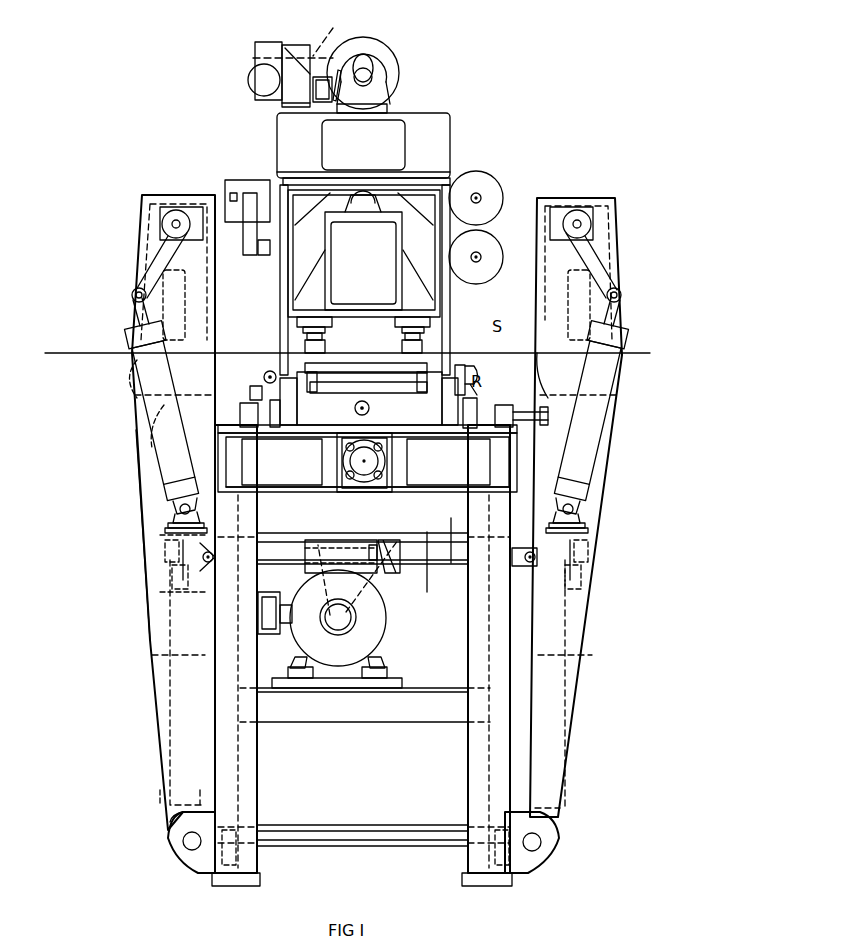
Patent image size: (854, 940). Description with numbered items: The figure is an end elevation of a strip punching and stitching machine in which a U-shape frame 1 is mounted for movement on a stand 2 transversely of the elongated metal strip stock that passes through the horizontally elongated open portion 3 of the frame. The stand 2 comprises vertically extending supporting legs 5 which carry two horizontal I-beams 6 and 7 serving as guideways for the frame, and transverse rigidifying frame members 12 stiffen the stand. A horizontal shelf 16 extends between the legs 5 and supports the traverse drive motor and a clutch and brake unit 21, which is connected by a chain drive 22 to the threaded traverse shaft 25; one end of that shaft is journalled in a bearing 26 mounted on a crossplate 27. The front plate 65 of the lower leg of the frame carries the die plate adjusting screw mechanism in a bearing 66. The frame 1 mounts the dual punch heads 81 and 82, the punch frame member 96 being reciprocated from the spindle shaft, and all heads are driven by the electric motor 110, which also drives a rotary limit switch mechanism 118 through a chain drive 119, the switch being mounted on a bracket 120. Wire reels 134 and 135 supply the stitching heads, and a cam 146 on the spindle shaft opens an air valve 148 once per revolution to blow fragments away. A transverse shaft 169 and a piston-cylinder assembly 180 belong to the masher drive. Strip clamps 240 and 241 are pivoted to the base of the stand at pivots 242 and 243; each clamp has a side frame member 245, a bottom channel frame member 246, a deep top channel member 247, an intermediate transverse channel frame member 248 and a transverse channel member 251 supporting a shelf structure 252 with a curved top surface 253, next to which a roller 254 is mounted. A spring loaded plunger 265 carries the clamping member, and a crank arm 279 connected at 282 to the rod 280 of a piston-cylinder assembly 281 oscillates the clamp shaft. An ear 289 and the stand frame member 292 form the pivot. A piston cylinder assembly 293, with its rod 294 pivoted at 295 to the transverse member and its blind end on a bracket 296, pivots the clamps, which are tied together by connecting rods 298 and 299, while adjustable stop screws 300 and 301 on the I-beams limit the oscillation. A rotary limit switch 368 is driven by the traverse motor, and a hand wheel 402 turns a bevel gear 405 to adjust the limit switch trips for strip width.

The U-shape frame 1 is at (458, 149).
The stand 2 is at (518, 611).
The horizontally elongated open portion 3 is at (458, 322).
The supporting legs 5 is at (252, 799).
The I-beam 6 is at (244, 463).
The I-beam 7 is at (498, 465).
The transverse rigidifying frame members 12 is at (439, 562).
The horizontal shelf 16 is at (360, 721).
The clutch and brake unit 21 is at (384, 620).
The chain drive 22 is at (345, 605).
The threaded traverse shaft 25 is at (360, 459).
The bearing 26 is at (386, 463).
The crossplate 27 is at (426, 487).
The front plate 65 is at (330, 420).
The bearing 66 is at (370, 409).
The punch head 81 is at (292, 346).
The punch head 82 is at (445, 340).
The punch frame member 96 is at (412, 272).
The electric motor 110 is at (398, 72).
The rotary limit switch mechanism 118 is at (255, 56).
The chain drive 119 is at (308, 33).
The bracket 120 is at (290, 98).
The wire reel 134 is at (494, 181).
The wire reel 135 is at (494, 247).
The cam 146 is at (368, 56).
The air valve 148 is at (323, 101).
The transverse shaft 169 is at (243, 258).
The piston-cylinder assembly 180 is at (232, 181).
The strip clamp 240 is at (147, 653).
The strip clamp 241 is at (592, 690).
The pivot 242 is at (190, 848).
The pivot 243 is at (541, 842).
The side frame member 245 is at (158, 738).
The channel frame member 246 is at (160, 798).
The channel member 247 is at (158, 231).
The intermediate transverse channel frame member 248 is at (165, 566).
The transverse channel member 251 is at (142, 458).
The shelf structure 252 is at (218, 382).
The curved top surface 253 is at (249, 379).
The roller 254 is at (133, 374).
The spring loaded plunger 265 is at (180, 318).
The crank arm 279 is at (150, 259).
The rod 280 is at (136, 320).
The piston-cylinder assembly 281 is at (166, 471).
The connection 282 is at (132, 294).
The ear 289 is at (170, 826).
The frame member 292 is at (218, 870).
The piston cylinder assembly 293 is at (316, 546).
The rod 294 is at (280, 553).
The pivot 295 is at (206, 578).
The bracket 296 is at (388, 553).
The connecting rod 298 is at (382, 560).
The connecting rod 299 is at (451, 563).
The adjustable stop screw 300 is at (225, 430).
The adjustable stop screw 301 is at (521, 404).
The rotary limit switch 368 is at (268, 632).
The hand wheel 402 is at (473, 369).
The bevel gear 405 is at (265, 381).